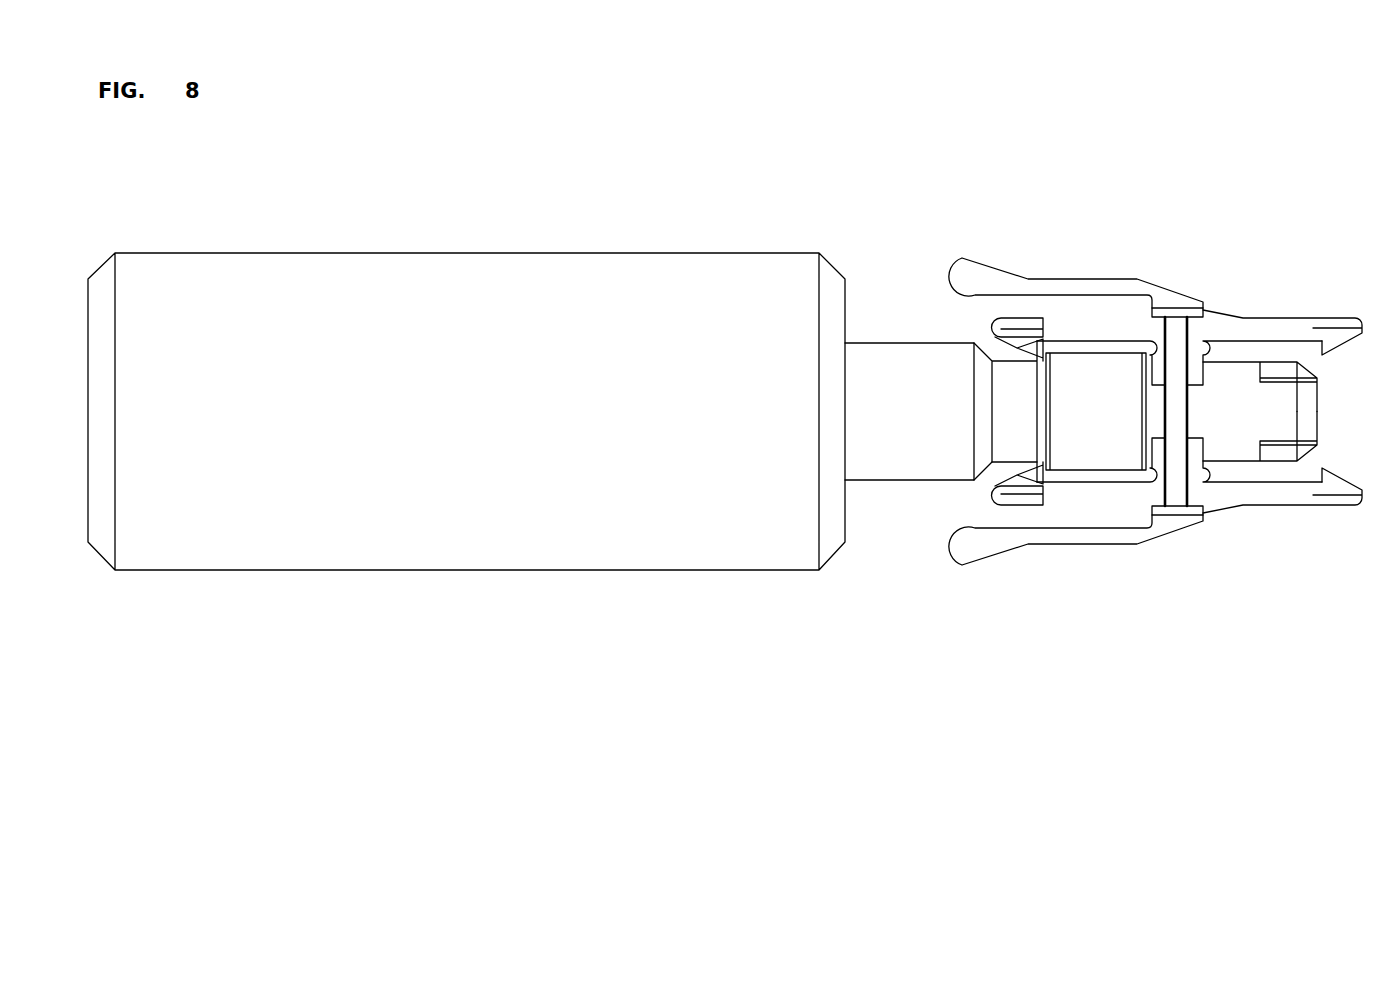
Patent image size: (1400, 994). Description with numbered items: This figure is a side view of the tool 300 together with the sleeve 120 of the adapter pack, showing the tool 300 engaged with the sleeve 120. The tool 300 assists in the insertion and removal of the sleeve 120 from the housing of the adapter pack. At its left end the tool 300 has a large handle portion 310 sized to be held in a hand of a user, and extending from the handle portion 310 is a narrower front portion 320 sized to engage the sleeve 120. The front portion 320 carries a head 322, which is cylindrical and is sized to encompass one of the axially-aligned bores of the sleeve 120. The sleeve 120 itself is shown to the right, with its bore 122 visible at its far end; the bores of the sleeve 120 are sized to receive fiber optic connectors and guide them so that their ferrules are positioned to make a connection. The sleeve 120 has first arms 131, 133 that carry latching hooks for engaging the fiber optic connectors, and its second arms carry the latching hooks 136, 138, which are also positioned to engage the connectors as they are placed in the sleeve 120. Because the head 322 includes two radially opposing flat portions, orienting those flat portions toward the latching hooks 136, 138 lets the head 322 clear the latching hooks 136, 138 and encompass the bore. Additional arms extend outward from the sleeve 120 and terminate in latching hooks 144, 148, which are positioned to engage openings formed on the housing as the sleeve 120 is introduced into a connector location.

The tool 300 is at (483, 230).
The handle portion 310 is at (412, 548).
The front portion 320 is at (900, 472).
The latching hook 136 is at (1013, 348).
The head 322 is at (1085, 365).
The sleeve 120 is at (1210, 278).
The latching hook 148 is at (968, 265).
The latching hook 144 is at (968, 555).
The first arm 131 is at (1285, 328).
The first arm 133 is at (1275, 500).
The bore 122 is at (1310, 415).
The latching hook 138 is at (1013, 478).